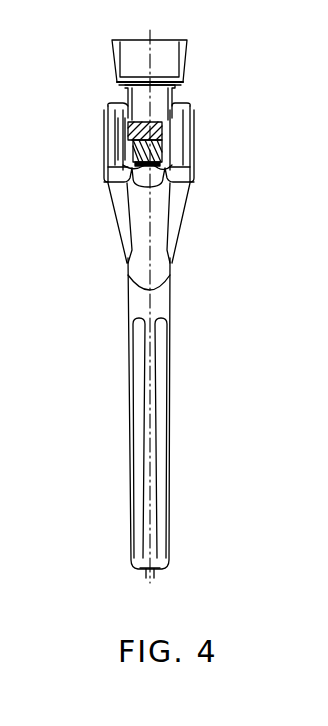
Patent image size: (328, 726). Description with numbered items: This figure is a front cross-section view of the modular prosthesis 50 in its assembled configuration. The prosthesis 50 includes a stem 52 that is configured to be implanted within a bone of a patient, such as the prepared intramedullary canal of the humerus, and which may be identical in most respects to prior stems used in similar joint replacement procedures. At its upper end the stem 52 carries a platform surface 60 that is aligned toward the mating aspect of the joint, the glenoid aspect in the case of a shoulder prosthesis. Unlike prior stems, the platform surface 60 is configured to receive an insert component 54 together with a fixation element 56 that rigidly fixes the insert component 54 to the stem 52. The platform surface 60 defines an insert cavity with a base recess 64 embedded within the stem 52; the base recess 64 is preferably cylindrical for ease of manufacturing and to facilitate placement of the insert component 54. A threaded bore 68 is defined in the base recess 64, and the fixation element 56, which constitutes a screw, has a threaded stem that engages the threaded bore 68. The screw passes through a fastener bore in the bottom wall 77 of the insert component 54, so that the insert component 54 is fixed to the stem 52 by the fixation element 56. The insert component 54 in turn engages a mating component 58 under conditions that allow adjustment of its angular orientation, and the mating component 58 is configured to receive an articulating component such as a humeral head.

The prosthesis 50 is at (85, 278).
The stem 52 is at (170, 283).
The insert component 54 is at (122, 93).
The fixation element 56 is at (162, 110).
The mating component 58 is at (186, 66).
The platform surface 60 is at (178, 98).
The base recess 64 is at (190, 132).
The threaded bore 68 is at (122, 167).
The bottom wall 77 is at (110, 148).